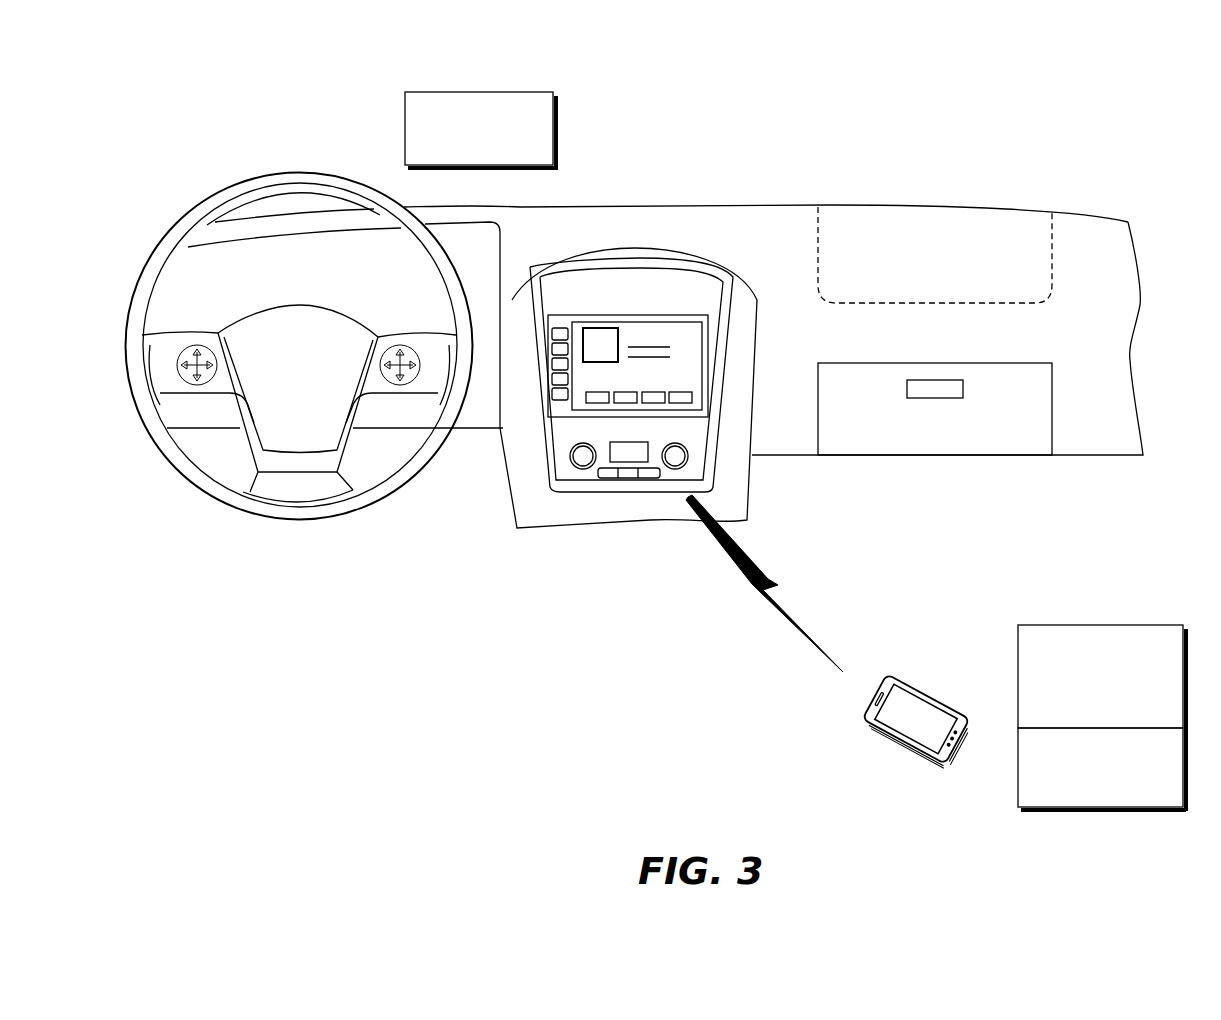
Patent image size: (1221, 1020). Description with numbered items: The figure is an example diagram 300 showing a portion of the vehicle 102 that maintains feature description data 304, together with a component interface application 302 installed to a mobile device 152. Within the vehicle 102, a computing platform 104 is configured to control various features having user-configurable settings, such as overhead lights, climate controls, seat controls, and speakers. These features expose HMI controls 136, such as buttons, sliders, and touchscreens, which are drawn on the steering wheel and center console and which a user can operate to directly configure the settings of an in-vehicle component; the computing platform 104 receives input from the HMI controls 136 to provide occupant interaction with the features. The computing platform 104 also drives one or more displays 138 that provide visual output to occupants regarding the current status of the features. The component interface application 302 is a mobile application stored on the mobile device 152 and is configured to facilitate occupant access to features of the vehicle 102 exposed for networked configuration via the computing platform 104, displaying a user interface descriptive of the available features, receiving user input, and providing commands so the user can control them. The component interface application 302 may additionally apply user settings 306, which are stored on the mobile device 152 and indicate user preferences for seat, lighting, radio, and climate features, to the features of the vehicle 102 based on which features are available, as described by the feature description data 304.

The diagram 300 is at (200, 70).
The vehicle 102 is at (1074, 216).
The computing platform 104 is at (643, 317).
The displays 138 is at (656, 322).
The HMI controls 136 is at (200, 345).
The feature description data 304 is at (410, 166).
The mobile device 152 is at (908, 660).
The component interface application 302 is at (950, 698).
The user settings 306 is at (1017, 803).